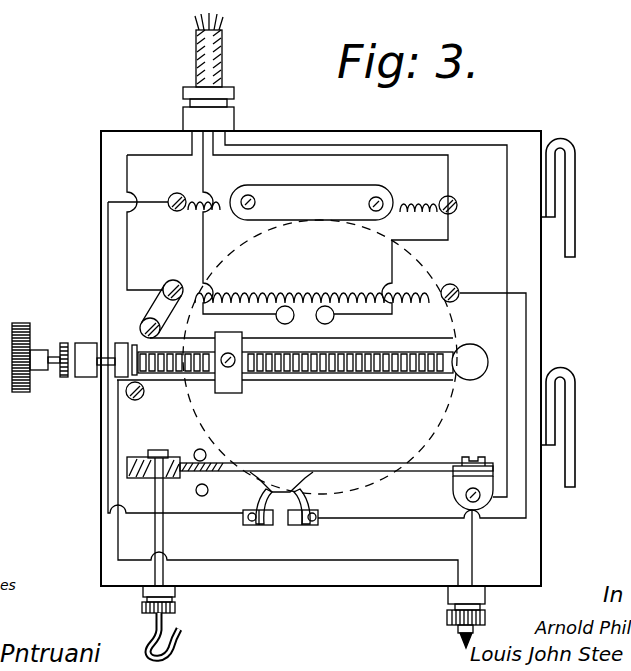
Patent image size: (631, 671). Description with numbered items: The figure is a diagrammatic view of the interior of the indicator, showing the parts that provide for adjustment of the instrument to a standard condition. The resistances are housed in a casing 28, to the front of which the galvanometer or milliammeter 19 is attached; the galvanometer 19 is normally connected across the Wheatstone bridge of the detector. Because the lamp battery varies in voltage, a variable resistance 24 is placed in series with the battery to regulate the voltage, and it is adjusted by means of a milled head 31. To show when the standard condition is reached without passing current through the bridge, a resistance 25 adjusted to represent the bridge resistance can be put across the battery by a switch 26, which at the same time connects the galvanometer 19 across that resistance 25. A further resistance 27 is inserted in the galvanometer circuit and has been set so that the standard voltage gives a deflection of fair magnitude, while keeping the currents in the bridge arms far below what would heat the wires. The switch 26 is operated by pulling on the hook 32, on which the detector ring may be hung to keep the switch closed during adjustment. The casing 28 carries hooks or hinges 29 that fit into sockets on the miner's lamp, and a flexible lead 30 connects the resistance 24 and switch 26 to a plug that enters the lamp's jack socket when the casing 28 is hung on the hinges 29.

The galvanometer 19 is at (441, 416).
The variable resistance 24 is at (316, 382).
The resistance 25 is at (290, 281).
The switch 26 is at (285, 468).
The further resistance 27 is at (297, 213).
The casing 28 is at (432, 131).
The hooks or hinges 29 is at (568, 205).
The flexible lead 30 is at (474, 629).
The milled head 31 is at (26, 393).
The hook 32 is at (146, 633).